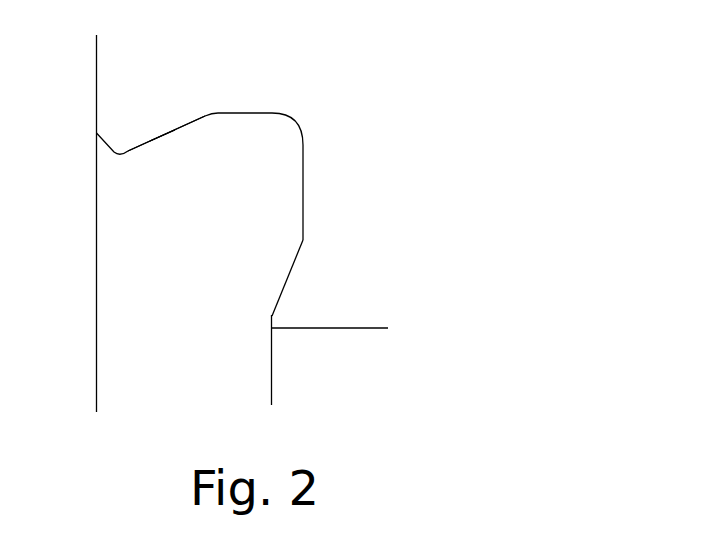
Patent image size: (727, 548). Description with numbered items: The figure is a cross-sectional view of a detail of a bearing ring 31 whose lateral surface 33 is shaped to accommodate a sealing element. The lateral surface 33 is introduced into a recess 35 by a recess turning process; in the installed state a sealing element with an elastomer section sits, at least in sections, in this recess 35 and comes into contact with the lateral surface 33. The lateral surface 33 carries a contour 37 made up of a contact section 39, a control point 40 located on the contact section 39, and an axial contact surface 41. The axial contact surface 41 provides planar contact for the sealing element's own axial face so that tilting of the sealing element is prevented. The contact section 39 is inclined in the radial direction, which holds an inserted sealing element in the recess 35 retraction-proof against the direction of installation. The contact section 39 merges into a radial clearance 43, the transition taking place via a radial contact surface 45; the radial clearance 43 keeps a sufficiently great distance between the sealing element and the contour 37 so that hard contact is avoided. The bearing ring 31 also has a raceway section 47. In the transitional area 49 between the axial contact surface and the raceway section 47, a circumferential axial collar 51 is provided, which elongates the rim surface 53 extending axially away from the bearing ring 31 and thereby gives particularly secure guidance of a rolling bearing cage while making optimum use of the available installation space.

The bearing ring 31 is at (403, 91).
The lateral surface 33 is at (170, 128).
The recess 35 is at (235, 159).
The contour 37 is at (166, 133).
The contact section 39 is at (162, 147).
The control point 40 is at (146, 146).
The axial contact surface 41 is at (304, 187).
The radial clearance 43 is at (259, 124).
The radial contact surface 45 is at (245, 113).
The raceway section 47 is at (320, 301).
The transitional area 49 is at (241, 296).
The axial collar 51 is at (268, 317).
The rim surface 53 is at (338, 330).